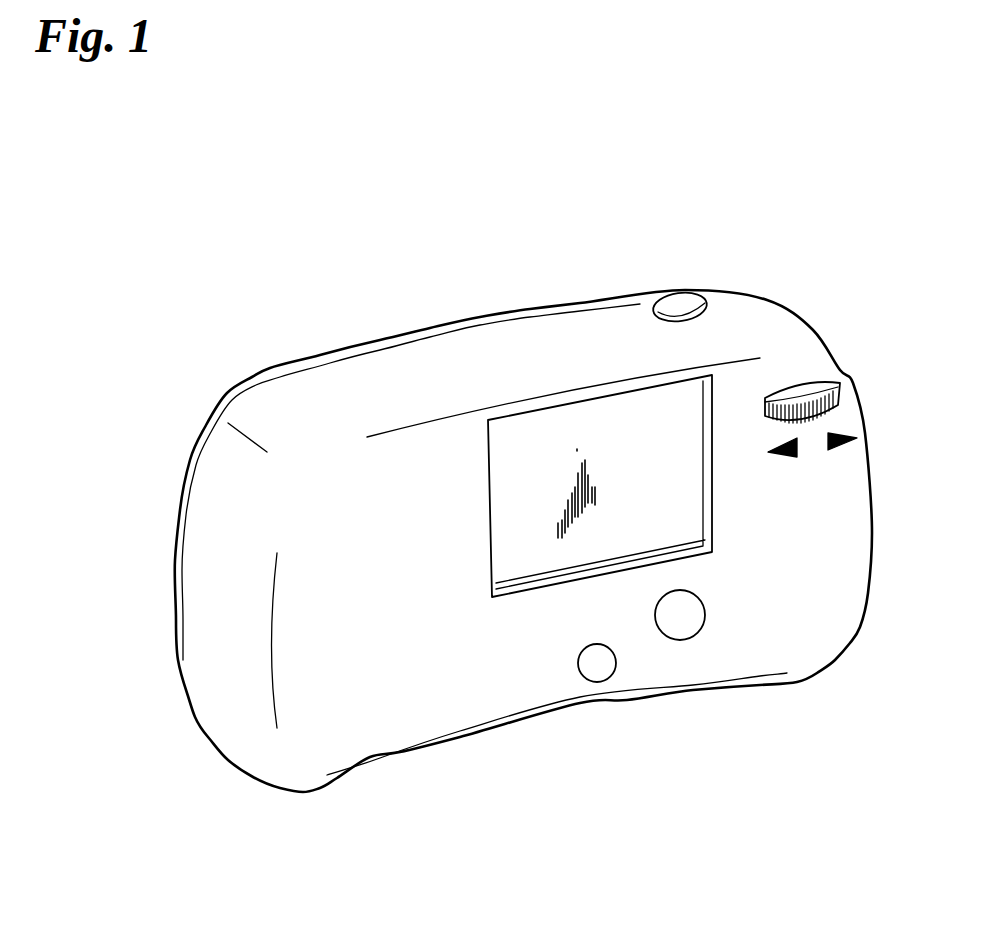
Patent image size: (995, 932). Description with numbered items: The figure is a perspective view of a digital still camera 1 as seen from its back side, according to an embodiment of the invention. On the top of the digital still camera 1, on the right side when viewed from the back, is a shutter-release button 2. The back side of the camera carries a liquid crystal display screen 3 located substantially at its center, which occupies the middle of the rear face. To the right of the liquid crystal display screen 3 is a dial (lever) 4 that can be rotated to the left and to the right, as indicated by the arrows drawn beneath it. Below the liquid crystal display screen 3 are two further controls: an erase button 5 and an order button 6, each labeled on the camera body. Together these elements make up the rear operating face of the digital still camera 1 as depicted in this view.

The digital still camera 1 is at (698, 213).
The shutter-release button 2 is at (683, 310).
The liquid crystal display screen 3 is at (490, 503).
The dial (lever) 4 is at (842, 402).
The erase button 5 is at (608, 658).
The order button 6 is at (698, 607).